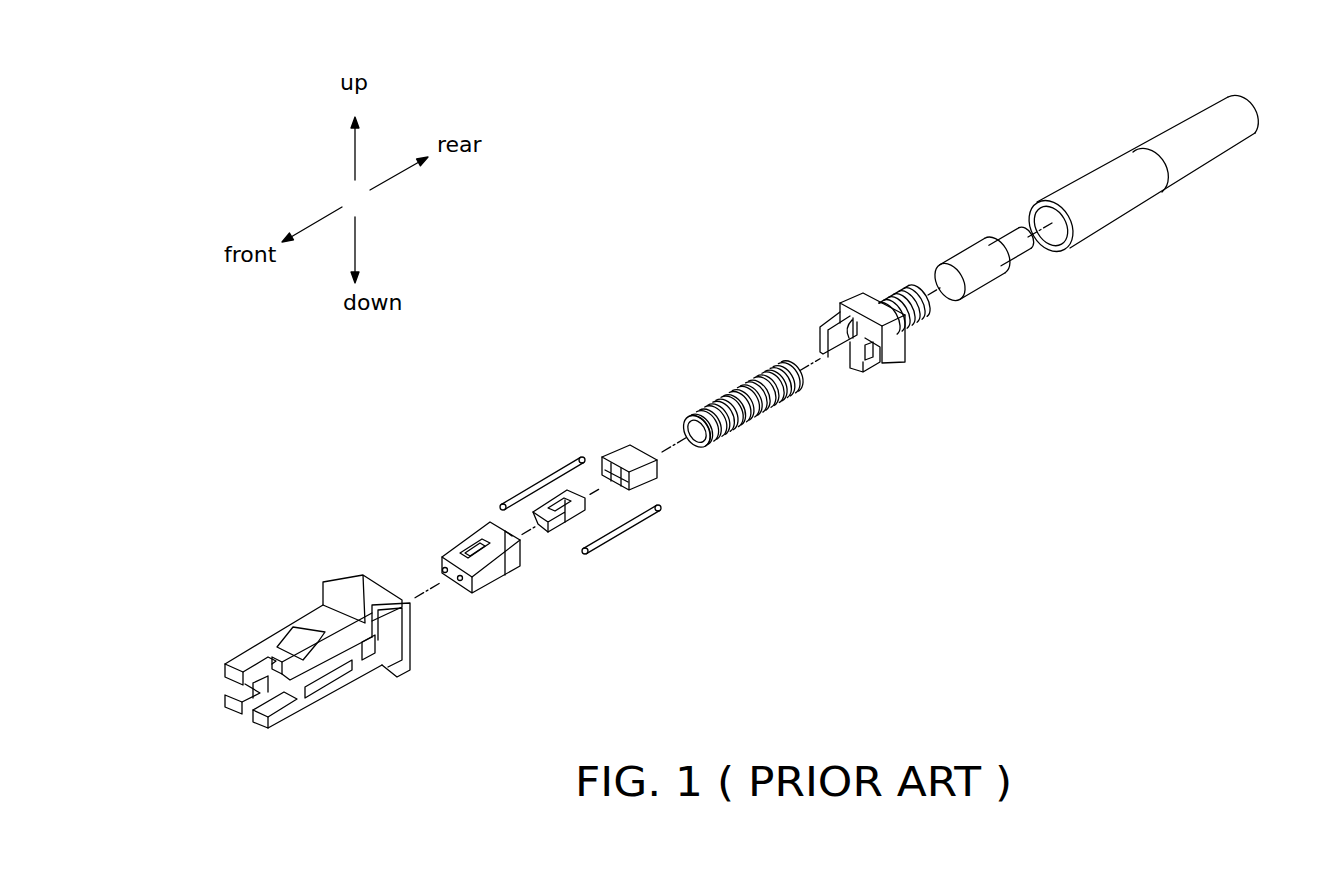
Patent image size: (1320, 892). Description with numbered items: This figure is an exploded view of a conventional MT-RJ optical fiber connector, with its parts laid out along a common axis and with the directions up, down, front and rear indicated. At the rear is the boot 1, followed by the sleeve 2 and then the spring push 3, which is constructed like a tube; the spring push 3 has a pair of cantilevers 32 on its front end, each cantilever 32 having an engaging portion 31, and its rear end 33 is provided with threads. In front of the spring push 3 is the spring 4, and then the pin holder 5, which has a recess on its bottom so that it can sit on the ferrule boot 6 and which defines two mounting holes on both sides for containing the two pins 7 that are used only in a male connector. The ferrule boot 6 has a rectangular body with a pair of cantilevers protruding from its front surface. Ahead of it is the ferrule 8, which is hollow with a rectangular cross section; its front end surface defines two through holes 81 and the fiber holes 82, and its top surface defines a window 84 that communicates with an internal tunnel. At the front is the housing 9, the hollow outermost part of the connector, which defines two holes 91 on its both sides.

The boot 1 is at (1213, 160).
The sleeve 2 is at (1015, 267).
The spring push 3 is at (897, 332).
The engaging portion 31 is at (862, 376).
The cantilevers 32 is at (822, 326).
The rear end 33 is at (903, 290).
The spring 4 is at (725, 436).
The pin holder 5 is at (652, 480).
The ferrule boot 6 is at (563, 490).
The pins 7 is at (523, 488).
The ferrule 8 is at (448, 534).
The through holes 81 is at (440, 567).
The fiber holes 82 is at (437, 577).
The window 84 is at (481, 540).
The housing 9 is at (333, 658).
The holes 91 is at (398, 676).